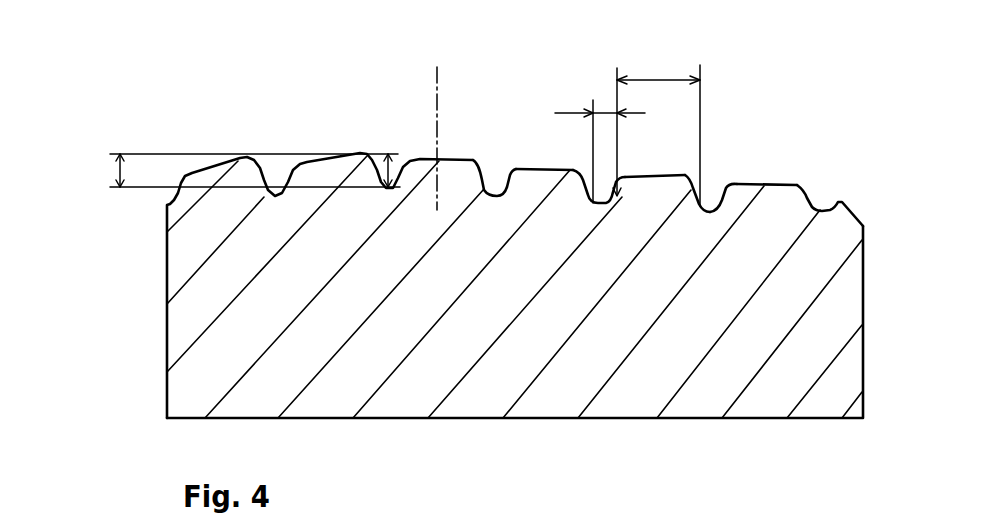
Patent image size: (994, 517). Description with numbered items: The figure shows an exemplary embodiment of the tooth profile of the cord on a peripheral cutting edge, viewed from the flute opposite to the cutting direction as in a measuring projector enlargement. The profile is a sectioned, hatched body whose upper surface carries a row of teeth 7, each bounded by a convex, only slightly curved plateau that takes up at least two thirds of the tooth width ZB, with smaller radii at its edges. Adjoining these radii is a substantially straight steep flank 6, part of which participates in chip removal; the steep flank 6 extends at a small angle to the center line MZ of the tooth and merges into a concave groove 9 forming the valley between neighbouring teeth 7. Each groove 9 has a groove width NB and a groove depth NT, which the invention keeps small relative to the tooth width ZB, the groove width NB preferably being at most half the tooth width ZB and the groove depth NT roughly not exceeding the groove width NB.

The steep flank 6 is at (724, 195).
The tooth 7 is at (542, 168).
The groove 9 is at (496, 178).
The groove depth NT is at (234, 170).
The groove width NB is at (594, 135).
The tooth width ZB is at (658, 125).
The center line MZ is at (437, 81).